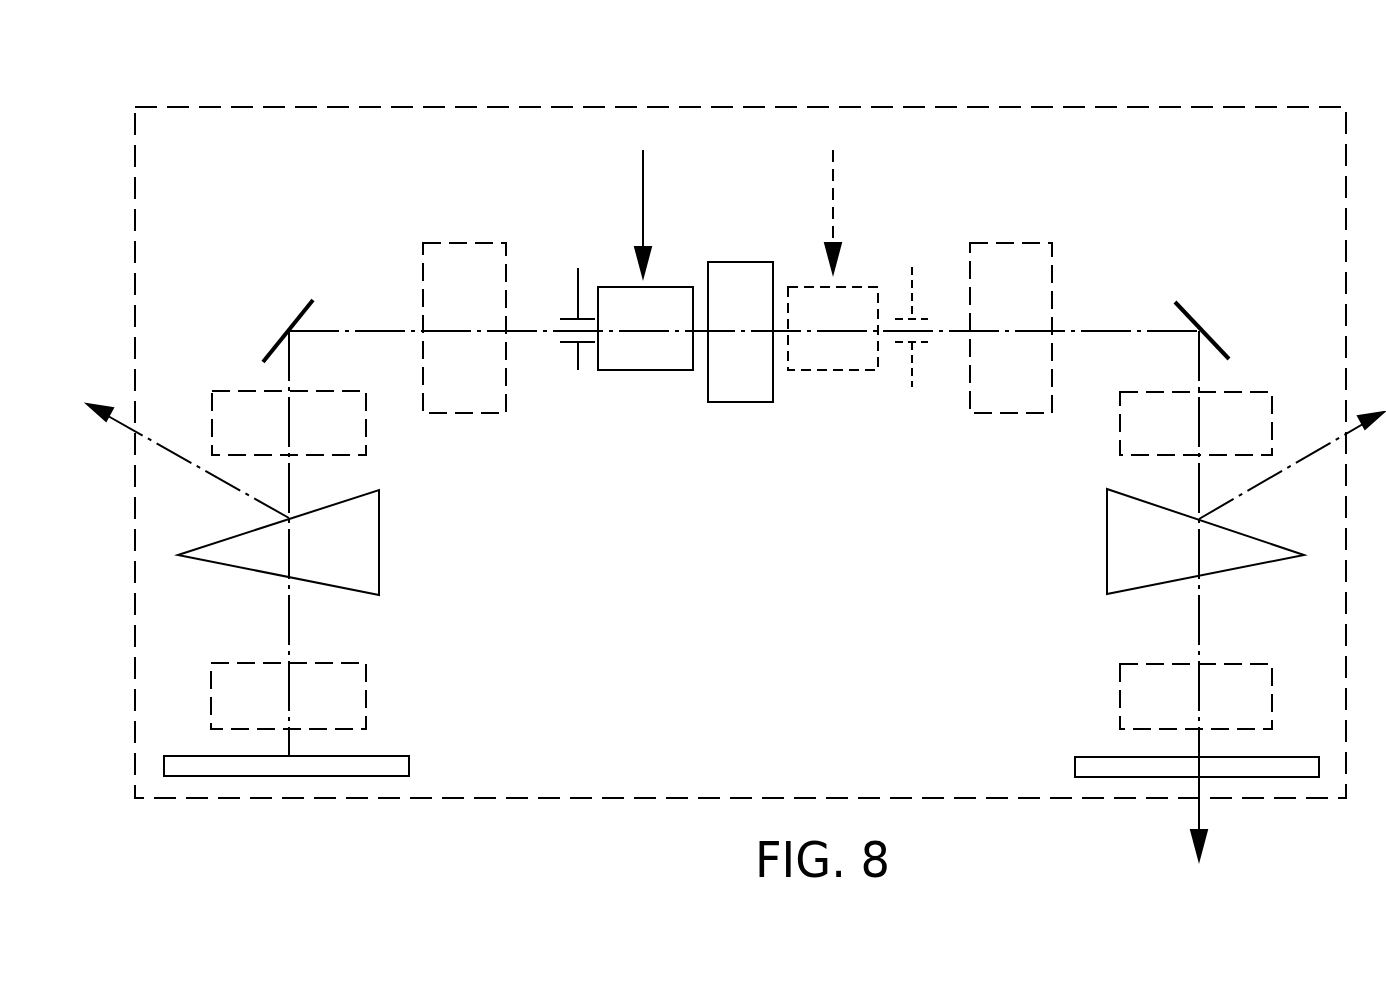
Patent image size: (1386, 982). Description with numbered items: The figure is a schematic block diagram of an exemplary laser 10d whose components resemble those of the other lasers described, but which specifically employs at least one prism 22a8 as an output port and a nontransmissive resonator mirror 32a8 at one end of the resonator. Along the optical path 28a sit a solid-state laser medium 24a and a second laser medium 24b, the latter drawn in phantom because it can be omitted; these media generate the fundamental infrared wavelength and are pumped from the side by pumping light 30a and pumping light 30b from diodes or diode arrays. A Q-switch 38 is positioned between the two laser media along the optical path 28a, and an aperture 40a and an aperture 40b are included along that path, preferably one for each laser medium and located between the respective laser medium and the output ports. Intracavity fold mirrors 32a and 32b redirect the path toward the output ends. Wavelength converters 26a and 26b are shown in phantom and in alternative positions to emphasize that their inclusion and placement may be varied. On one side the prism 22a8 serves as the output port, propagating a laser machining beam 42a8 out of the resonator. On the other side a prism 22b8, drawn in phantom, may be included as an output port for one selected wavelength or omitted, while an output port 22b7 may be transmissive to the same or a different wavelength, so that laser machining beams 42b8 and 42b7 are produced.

The laser 10d is at (1178, 88).
The prism 22a8 is at (379, 532).
The prism 22b8 is at (1107, 533).
The output port 22b7 is at (1075, 767).
The laser medium 24a is at (640, 370).
The laser medium 24b is at (830, 370).
The wavelength converter 26a is at (445, 242).
The wavelength converter 26b is at (1029, 240).
The optical path 28a is at (518, 330).
The pumping light 30a is at (643, 218).
The pumping light 30b is at (833, 200).
The fold mirror 32a is at (307, 310).
The fold mirror 32b is at (1222, 343).
The nontransmissive resonator mirror 32a8 is at (409, 767).
The Q-switch 38 is at (738, 402).
The aperture 40a is at (578, 370).
The aperture 40b is at (907, 360).
The laser machining beam 42a8 is at (177, 453).
The laser machining beam 42b8 is at (1301, 460).
The laser machining beam 42b7 is at (1199, 810).